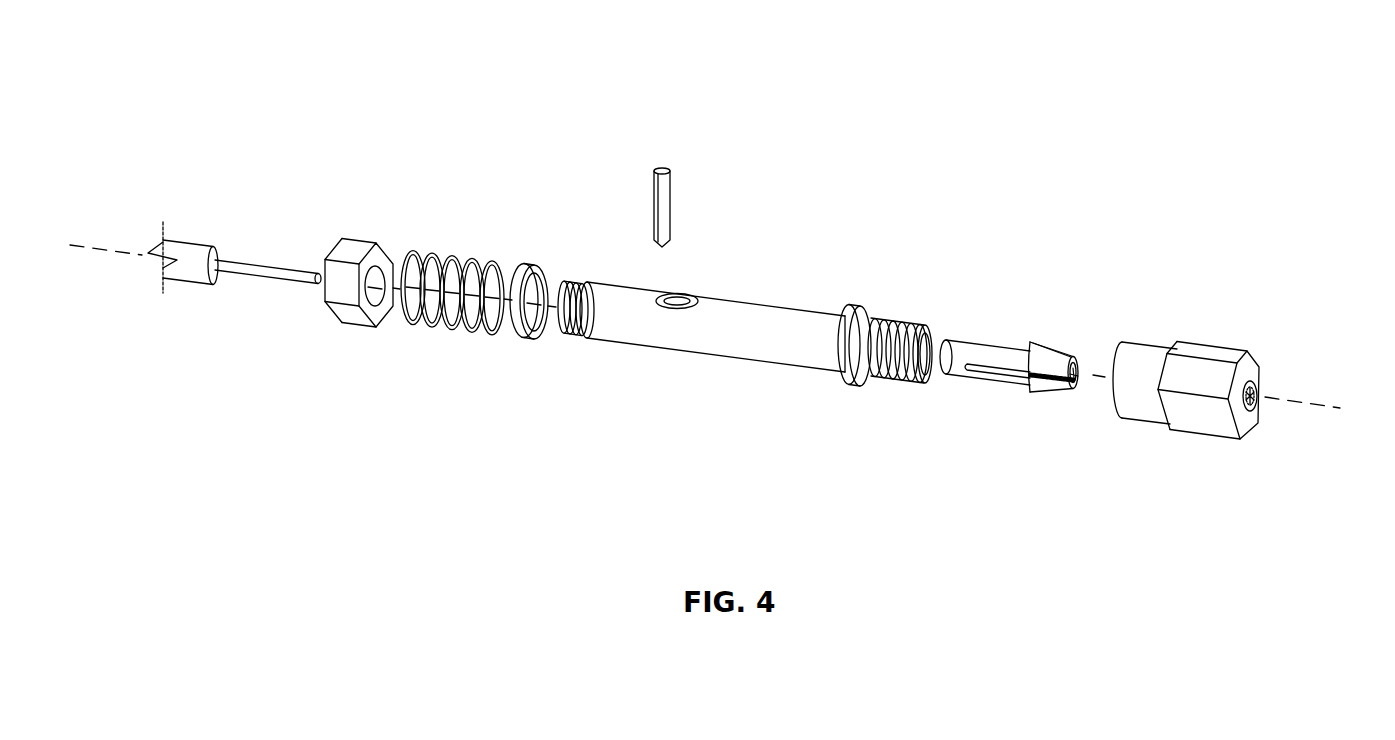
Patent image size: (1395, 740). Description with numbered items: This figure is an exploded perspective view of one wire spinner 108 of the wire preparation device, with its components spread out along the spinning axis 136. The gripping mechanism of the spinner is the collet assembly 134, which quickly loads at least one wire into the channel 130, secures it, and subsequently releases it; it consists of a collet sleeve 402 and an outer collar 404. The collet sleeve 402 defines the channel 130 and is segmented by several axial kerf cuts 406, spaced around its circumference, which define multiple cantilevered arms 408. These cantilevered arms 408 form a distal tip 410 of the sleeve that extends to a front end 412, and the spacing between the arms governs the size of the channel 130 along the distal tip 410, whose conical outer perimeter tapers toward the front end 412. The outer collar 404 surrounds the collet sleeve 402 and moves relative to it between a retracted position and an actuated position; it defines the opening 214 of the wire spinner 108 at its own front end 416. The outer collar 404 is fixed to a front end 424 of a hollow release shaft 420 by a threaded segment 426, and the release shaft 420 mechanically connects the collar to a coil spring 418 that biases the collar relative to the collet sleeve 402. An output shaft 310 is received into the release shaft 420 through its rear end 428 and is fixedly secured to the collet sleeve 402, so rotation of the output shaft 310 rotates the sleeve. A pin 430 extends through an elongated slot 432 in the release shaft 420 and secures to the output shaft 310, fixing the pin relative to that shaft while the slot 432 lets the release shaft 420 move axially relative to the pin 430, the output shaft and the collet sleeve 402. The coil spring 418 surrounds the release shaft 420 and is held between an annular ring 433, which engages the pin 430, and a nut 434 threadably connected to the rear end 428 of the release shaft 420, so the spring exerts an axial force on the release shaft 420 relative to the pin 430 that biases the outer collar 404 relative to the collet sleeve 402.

The wire spinner 108 is at (486, 114).
The channel 130 is at (1086, 386).
The collet assembly 134 is at (1238, 532).
The spinning axis 136 is at (1313, 398).
The opening 214 is at (1265, 409).
The output shaft 310 is at (192, 250).
The collet sleeve 402 is at (992, 352).
The outer collar 404 is at (1202, 352).
The axial kerf cut 406 is at (1003, 381).
The cantilevered arm 408 is at (1037, 358).
The distal tip 410 is at (1052, 330).
The front end 412 is at (1074, 362).
The front end 416 is at (1256, 380).
The coil spring 418 is at (447, 330).
The release shaft 420 is at (732, 340).
The front end 424 is at (932, 381).
The threaded segment 426 is at (865, 378).
The rear end 428 is at (562, 320).
The pin 430 is at (670, 190).
The slot 432 is at (684, 292).
The annular ring 433 is at (525, 270).
The nut 434 is at (358, 245).